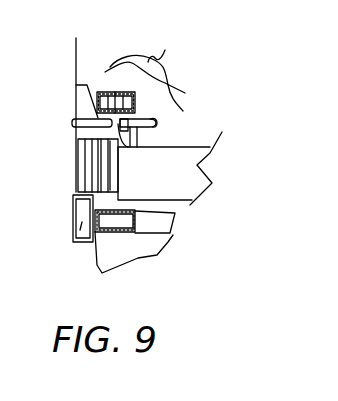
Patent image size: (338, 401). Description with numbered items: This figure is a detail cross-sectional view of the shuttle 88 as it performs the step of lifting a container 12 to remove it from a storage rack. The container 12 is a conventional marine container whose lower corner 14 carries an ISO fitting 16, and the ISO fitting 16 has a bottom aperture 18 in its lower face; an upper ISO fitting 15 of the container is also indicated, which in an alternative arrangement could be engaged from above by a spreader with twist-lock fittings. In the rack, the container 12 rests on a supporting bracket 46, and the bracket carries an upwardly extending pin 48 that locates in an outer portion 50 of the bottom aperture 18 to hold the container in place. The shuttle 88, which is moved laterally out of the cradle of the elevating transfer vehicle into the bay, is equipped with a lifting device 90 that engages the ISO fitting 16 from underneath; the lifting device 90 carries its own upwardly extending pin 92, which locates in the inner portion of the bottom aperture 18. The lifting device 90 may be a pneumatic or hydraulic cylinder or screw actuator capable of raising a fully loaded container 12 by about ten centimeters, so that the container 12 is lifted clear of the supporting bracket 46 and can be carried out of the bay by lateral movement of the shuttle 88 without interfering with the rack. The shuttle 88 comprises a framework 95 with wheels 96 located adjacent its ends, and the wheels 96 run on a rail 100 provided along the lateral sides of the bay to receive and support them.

The container 12 is at (185, 93).
The lower corner 14 is at (183, 111).
The upper ISO fitting 15 is at (172, 235).
The ISO fitting 16 is at (168, 72).
The bottom aperture 18 is at (128, 92).
The supporting bracket 46 is at (76, 126).
The upwardly extending pin 48 is at (118, 124).
The outer portion 50 is at (115, 92).
The shuttle 88 is at (68, 164).
The lifting device 90 is at (154, 124).
The upwardly extending pin 92 is at (165, 50).
The framework 95 is at (208, 155).
The wheel 96 is at (76, 179).
The rail 100 is at (73, 243).